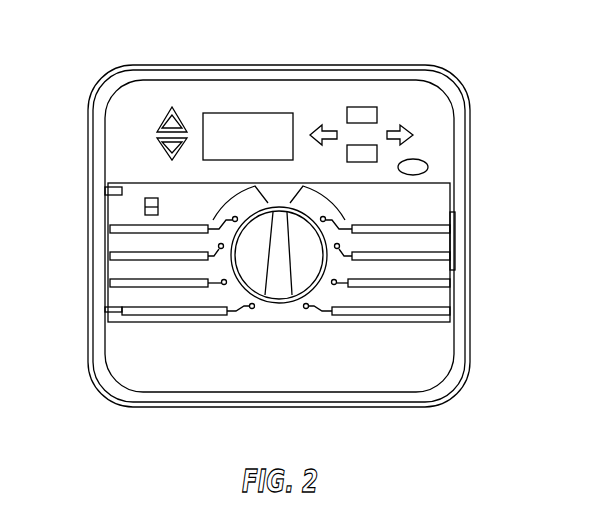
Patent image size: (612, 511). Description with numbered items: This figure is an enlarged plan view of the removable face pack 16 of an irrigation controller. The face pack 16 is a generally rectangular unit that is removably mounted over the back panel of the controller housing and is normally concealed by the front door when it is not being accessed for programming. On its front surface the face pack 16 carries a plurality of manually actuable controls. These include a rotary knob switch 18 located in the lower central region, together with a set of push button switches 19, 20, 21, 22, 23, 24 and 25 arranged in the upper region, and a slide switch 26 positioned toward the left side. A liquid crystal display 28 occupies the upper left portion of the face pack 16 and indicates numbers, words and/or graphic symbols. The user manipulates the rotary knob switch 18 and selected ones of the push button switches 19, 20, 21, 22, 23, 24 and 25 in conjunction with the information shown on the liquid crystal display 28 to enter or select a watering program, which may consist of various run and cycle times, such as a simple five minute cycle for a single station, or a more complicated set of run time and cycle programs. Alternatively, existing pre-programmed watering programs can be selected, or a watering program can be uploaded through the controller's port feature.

The face pack 16 is at (445, 127).
The rotary knob switch 18 is at (280, 278).
The push button switch 19 is at (323, 127).
The push button switch 20 is at (408, 128).
The push button switch 21 is at (162, 122).
The push button switch 22 is at (162, 143).
The push button switch 23 is at (358, 107).
The push button switch 24 is at (352, 155).
The push button switch 25 is at (430, 163).
The slide switch 26 is at (145, 210).
The liquid crystal display 28 is at (225, 123).